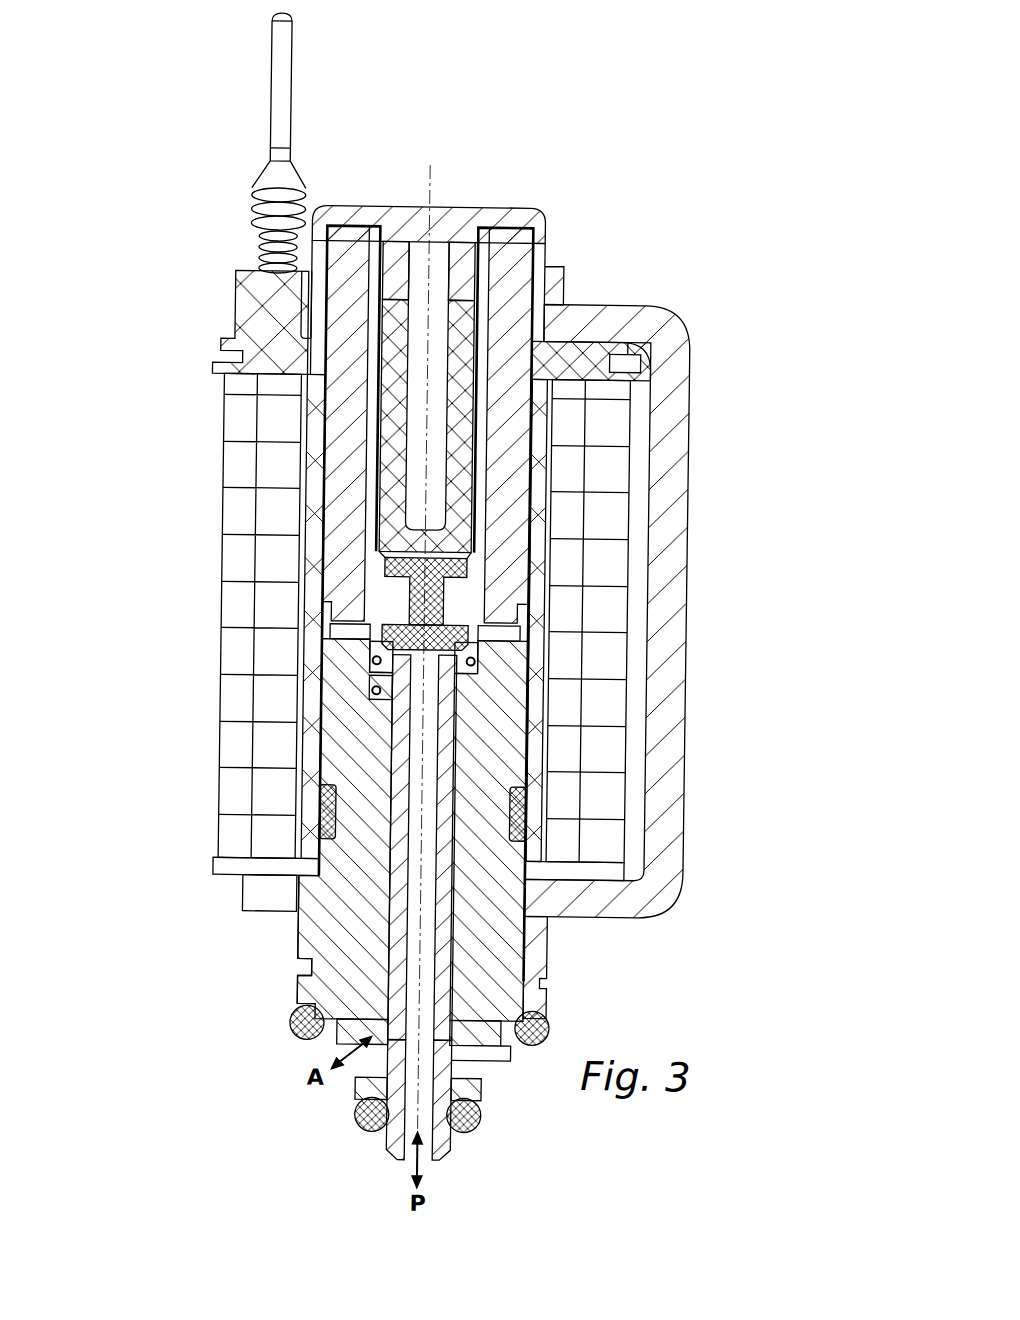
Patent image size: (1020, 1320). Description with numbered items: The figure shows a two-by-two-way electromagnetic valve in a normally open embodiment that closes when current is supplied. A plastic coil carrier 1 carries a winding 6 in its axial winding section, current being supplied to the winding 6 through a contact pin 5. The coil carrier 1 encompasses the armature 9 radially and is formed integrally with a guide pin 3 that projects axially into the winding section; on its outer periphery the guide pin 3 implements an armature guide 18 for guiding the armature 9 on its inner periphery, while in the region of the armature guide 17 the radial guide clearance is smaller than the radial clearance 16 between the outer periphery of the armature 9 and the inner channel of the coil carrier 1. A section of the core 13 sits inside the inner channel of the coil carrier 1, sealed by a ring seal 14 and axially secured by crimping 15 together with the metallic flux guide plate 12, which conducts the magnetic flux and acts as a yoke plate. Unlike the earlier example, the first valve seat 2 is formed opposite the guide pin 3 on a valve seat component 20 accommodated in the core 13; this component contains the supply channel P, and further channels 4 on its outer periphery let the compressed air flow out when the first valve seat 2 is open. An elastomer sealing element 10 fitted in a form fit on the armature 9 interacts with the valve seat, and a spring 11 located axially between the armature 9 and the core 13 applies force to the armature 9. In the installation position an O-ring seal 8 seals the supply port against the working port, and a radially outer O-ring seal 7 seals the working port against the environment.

The coil carrier 1 is at (277, 342).
The first valve seat 2 is at (409, 661).
The guide pin 3 is at (401, 453).
The second fluid channels 4 is at (395, 781).
The contact pin 5 is at (279, 94).
The winding 6 is at (601, 563).
The O-ring seal 7 is at (318, 1024).
The O-ring seal 8 is at (384, 1115).
The armature 9 is at (512, 504).
The sealing element 10 is at (441, 607).
The spring 11 is at (478, 646).
The flux guide plate 12 is at (667, 715).
The core 13 is at (354, 718).
The ring seal 14 is at (336, 819).
The crimping 15 is at (304, 967).
The radial clearance 16 is at (533, 429).
The armature guide 17 is at (529, 316).
The armature guide 18 is at (536, 379).
The valve seat component 20 is at (409, 682).